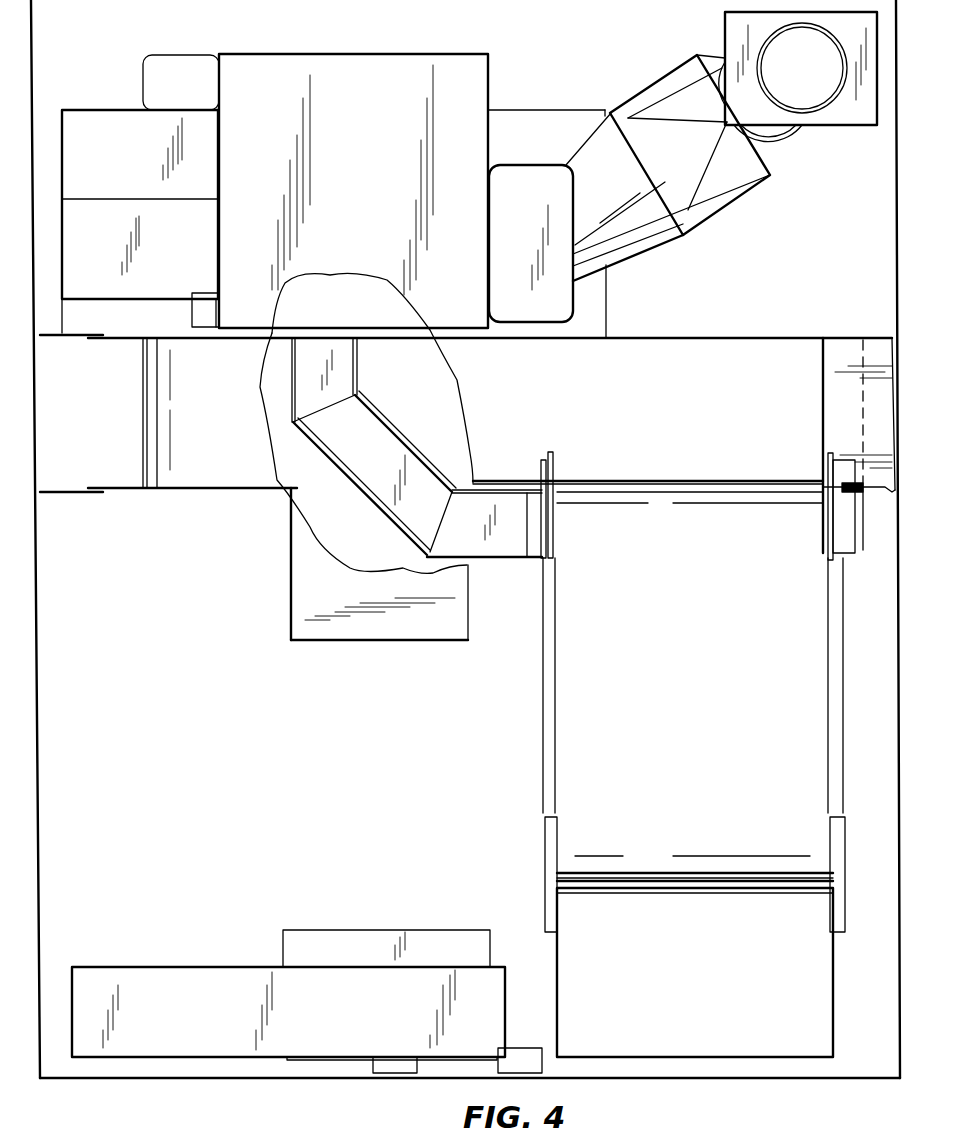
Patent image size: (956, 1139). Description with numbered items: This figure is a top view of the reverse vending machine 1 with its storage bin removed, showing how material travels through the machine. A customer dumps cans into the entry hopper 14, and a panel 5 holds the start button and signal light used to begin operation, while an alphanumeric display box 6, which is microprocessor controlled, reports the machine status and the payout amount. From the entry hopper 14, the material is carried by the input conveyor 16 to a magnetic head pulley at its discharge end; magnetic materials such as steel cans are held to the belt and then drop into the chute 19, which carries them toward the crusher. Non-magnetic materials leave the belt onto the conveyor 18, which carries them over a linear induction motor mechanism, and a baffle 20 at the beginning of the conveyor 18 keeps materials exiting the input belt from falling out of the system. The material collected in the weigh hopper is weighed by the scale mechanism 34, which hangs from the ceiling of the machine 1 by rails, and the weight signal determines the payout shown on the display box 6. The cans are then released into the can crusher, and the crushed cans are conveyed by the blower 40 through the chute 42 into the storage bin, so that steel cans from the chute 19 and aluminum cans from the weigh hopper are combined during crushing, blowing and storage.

The reverse vending machine 1 is at (248, 1100).
The panel 5 is at (526, 1058).
The alphanumeric display box 6 is at (397, 1064).
The entry hopper 14 is at (705, 978).
The input conveyor 16 is at (694, 788).
The conveyor 18 is at (693, 428).
The chute 19 is at (371, 460).
The baffle 20 is at (861, 428).
The scale mechanism 34 is at (373, 146).
The blower 40 is at (536, 151).
The chute 42 is at (722, 163).